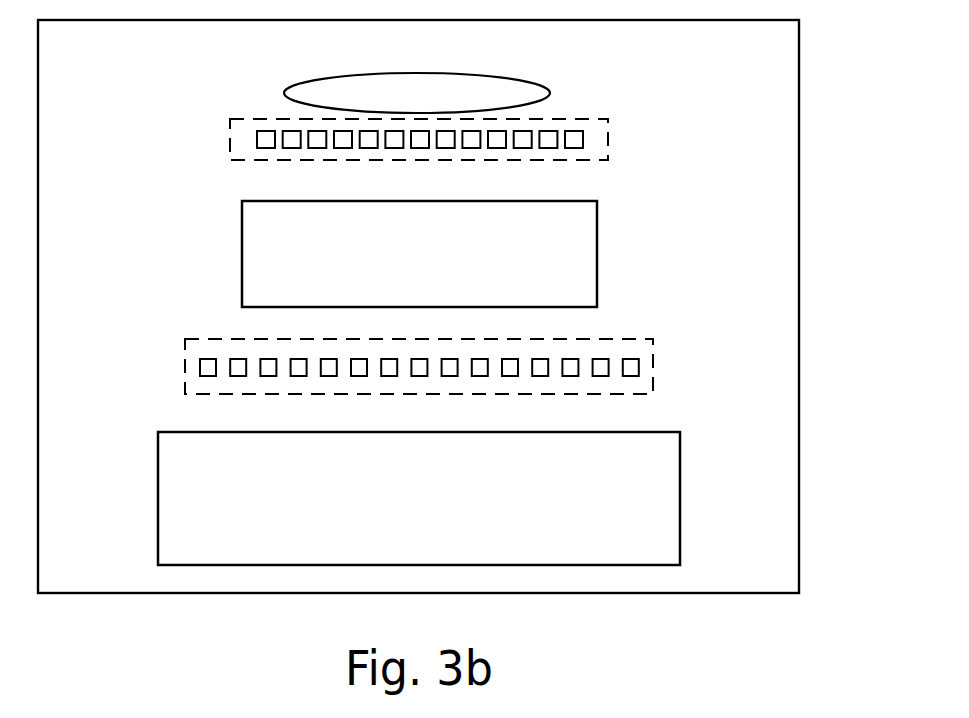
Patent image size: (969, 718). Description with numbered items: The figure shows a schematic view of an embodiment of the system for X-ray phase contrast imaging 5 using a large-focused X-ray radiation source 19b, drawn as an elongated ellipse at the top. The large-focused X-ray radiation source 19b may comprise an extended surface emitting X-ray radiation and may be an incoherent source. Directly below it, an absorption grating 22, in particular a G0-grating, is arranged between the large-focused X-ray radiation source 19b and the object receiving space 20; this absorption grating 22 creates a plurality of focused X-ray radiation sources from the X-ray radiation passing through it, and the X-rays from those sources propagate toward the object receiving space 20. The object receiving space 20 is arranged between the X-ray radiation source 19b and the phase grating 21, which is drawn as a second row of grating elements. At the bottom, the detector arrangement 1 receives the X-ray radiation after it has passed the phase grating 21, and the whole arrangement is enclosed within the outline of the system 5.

The system for X-ray phase contrast imaging 5 is at (800, 275).
The large-focused X-ray radiation source 19b is at (537, 95).
The absorption grating 22 is at (573, 137).
The object receiving space 20 is at (597, 253).
The phase grating 21 is at (653, 352).
The detector arrangement 1 is at (680, 495).